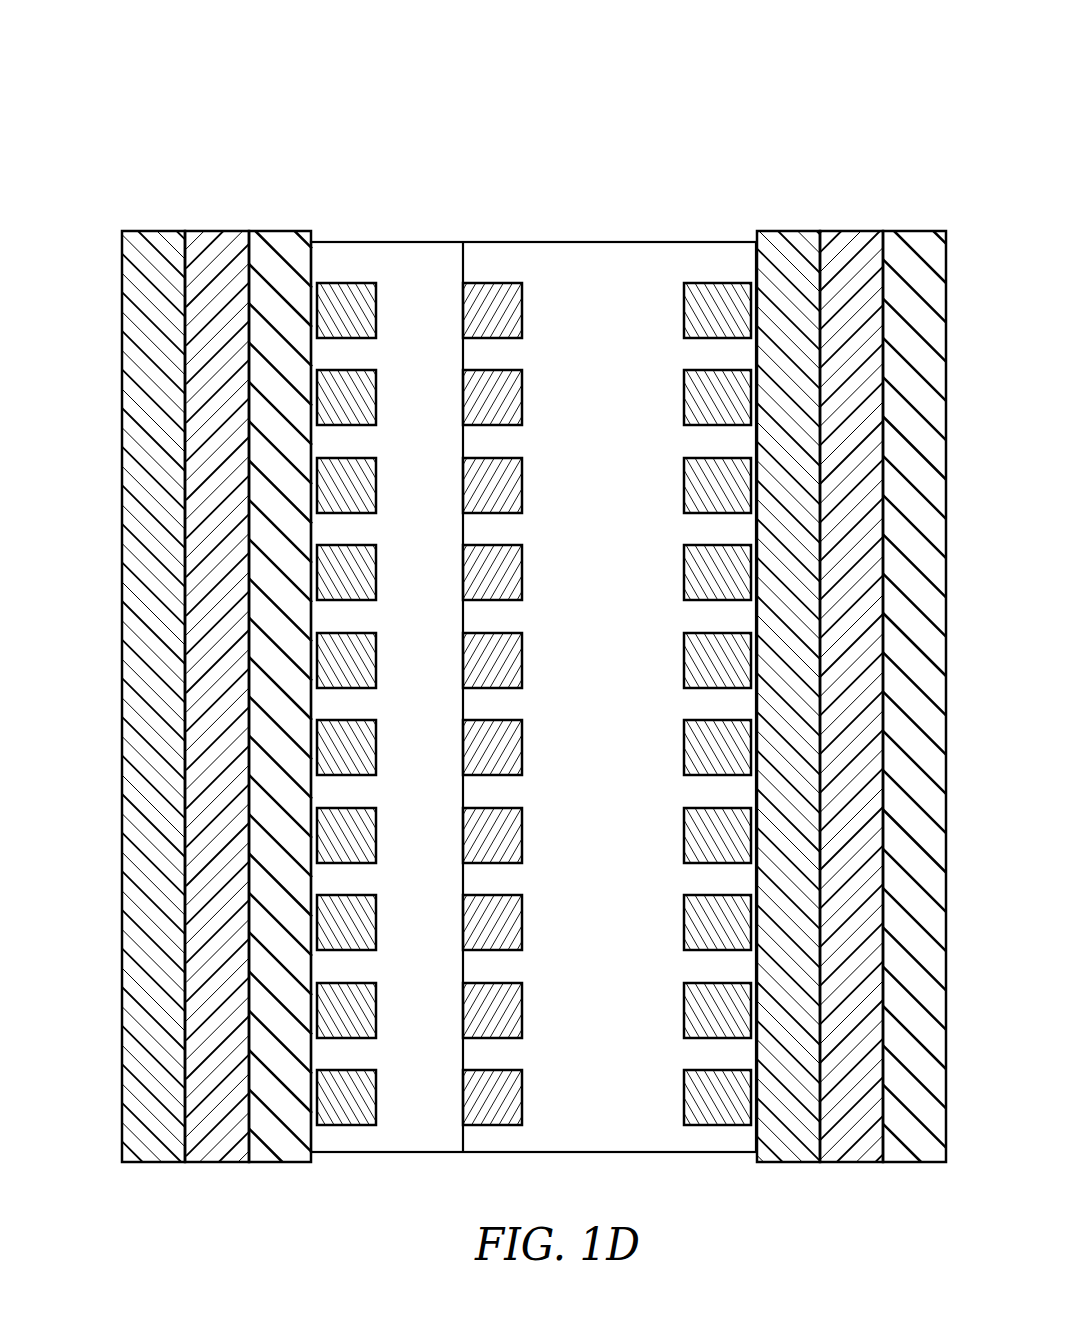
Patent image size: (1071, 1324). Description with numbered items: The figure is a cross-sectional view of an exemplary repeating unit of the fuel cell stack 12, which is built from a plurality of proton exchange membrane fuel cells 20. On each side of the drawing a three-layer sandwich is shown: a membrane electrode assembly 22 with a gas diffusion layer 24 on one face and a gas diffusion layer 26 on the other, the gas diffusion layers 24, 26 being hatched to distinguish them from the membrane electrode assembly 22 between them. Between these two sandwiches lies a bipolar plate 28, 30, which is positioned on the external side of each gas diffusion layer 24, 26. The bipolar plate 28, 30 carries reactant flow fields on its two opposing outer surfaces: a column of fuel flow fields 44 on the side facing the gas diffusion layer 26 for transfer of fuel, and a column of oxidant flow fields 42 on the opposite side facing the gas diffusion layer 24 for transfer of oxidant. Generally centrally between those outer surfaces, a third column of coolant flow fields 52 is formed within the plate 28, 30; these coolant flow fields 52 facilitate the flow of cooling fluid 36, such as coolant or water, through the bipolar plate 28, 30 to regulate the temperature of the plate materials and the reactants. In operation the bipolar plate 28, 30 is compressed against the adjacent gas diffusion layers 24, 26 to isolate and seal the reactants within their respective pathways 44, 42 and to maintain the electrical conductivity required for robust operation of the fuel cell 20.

The fuel cell stack 12 is at (168, 117).
The fuel cell 20 is at (534, 670).
The membrane electrode assembly 22 is at (222, 232).
The gas diffusion layer 24 is at (157, 231).
The gas diffusion layer 26 is at (275, 232).
The bipolar plate 28 is at (552, 170).
The bipolar plate 30 is at (533, 657).
The cooling fluid 36 is at (480, 306).
The oxidant flow fields 42 is at (724, 318).
The fuel flow fields 44 is at (338, 310).
The coolant flow fields 52 is at (512, 318).